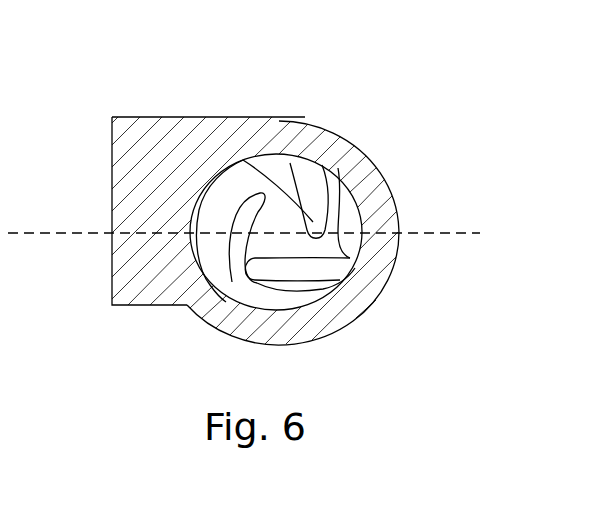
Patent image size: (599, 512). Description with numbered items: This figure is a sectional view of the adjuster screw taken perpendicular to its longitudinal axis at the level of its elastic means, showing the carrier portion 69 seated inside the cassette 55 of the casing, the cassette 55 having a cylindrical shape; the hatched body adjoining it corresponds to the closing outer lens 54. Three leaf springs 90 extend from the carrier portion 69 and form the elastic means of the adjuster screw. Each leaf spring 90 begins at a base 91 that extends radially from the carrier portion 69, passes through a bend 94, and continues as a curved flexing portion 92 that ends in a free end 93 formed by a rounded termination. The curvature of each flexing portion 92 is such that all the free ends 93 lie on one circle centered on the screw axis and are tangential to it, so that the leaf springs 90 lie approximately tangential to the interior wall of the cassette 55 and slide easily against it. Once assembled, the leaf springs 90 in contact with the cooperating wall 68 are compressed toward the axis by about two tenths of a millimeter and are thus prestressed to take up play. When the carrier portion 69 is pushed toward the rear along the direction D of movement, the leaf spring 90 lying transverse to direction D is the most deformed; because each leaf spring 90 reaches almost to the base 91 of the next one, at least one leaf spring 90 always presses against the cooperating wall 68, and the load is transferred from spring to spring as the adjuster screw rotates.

The closing outer lens 54 is at (133, 142).
The cassette 55 is at (372, 187).
The cooperating wall 68 is at (330, 262).
The carrier portion 69 is at (258, 162).
The leaf spring 90 is at (280, 290).
The base 91 is at (250, 158).
The flexing portion 92 is at (340, 205).
The free end 93 is at (303, 185).
The bend 94 is at (245, 268).
The direction of movement D is at (57, 233).